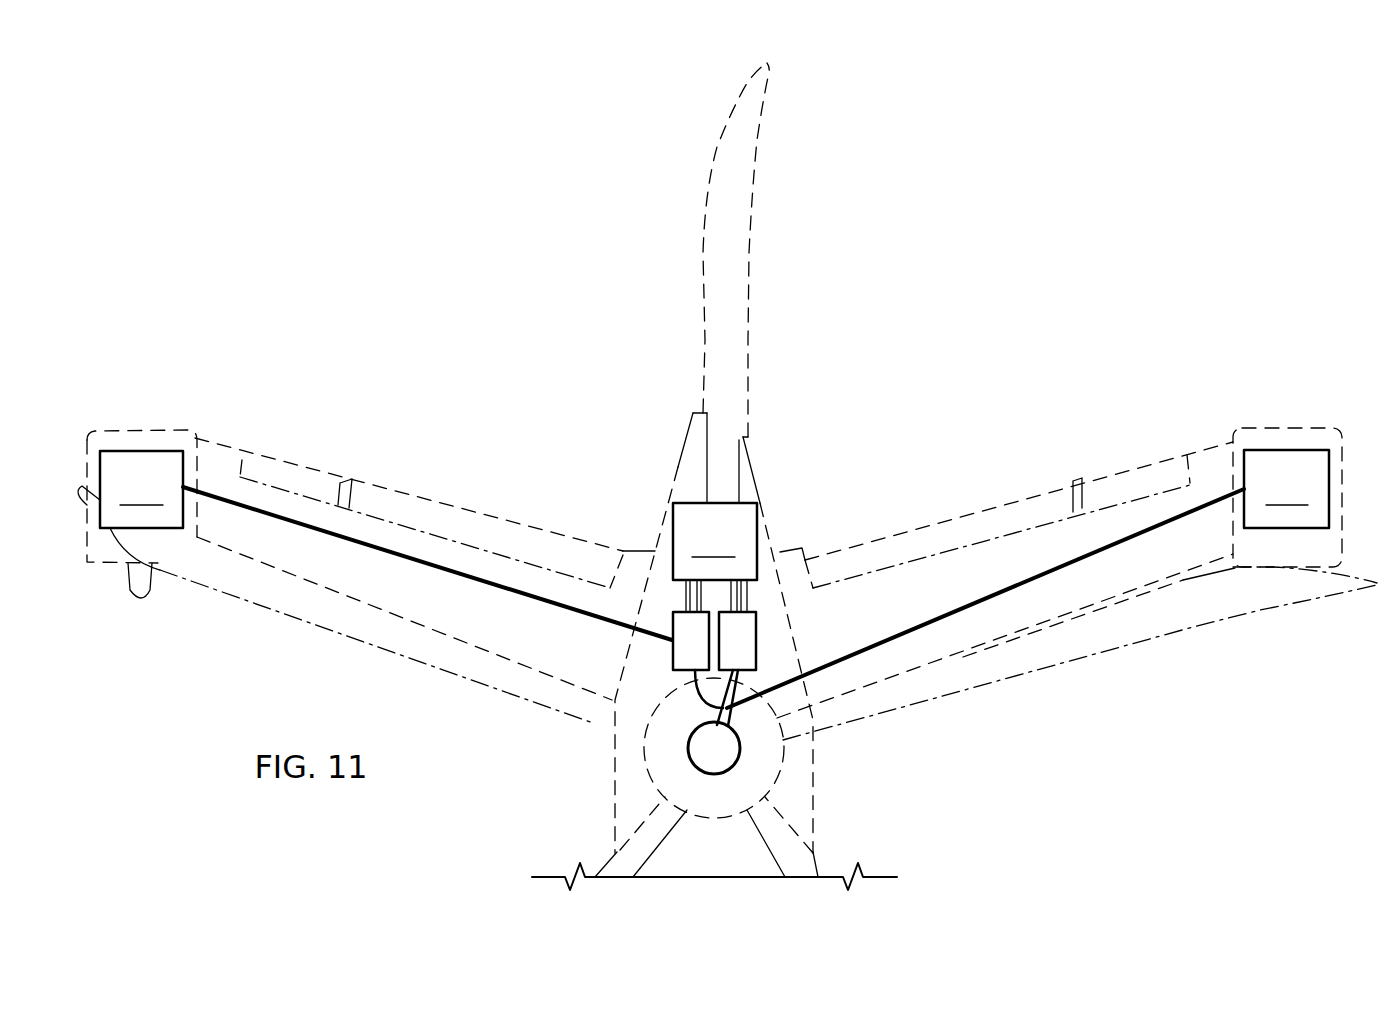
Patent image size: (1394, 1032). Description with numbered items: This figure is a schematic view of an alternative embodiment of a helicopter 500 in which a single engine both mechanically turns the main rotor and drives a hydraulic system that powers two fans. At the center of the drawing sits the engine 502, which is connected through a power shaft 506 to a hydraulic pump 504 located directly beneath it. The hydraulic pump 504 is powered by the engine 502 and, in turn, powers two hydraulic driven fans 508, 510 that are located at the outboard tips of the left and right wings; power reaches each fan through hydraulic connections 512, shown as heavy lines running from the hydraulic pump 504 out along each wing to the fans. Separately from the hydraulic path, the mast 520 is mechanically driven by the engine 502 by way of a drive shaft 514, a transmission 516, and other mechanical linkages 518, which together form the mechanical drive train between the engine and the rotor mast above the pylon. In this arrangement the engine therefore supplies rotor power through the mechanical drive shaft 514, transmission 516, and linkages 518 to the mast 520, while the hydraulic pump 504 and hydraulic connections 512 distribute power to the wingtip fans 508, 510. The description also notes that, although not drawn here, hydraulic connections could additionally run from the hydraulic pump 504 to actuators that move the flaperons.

The helicopter 500 is at (949, 318).
The engine 502 is at (715, 557).
The hydraulic pump 504 is at (673, 653).
The power shaft 506 is at (673, 590).
The hydraulic driven fan 508 is at (1287, 497).
The hydraulic driven fan 510 is at (137, 514).
The hydraulic connections 512 is at (568, 612).
The drive shaft 514 is at (778, 572).
The transmission 516 is at (757, 653).
The mechanical linkages 518 is at (757, 742).
The mast 520 is at (660, 746).